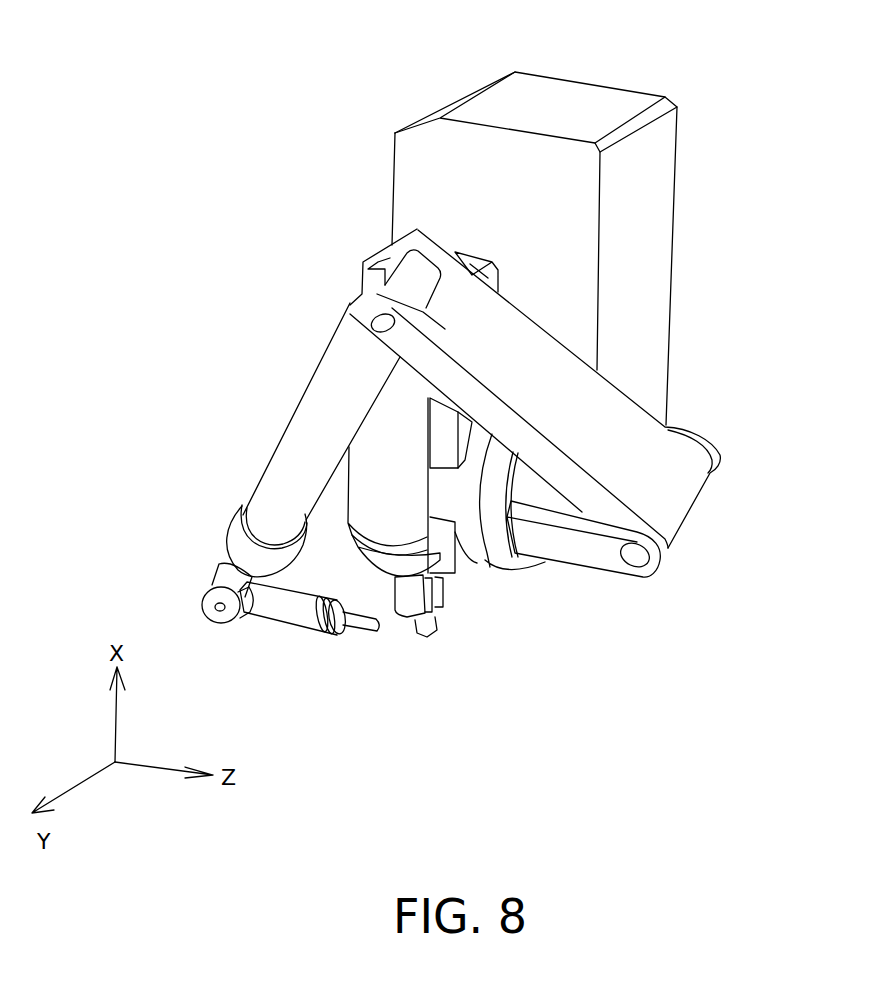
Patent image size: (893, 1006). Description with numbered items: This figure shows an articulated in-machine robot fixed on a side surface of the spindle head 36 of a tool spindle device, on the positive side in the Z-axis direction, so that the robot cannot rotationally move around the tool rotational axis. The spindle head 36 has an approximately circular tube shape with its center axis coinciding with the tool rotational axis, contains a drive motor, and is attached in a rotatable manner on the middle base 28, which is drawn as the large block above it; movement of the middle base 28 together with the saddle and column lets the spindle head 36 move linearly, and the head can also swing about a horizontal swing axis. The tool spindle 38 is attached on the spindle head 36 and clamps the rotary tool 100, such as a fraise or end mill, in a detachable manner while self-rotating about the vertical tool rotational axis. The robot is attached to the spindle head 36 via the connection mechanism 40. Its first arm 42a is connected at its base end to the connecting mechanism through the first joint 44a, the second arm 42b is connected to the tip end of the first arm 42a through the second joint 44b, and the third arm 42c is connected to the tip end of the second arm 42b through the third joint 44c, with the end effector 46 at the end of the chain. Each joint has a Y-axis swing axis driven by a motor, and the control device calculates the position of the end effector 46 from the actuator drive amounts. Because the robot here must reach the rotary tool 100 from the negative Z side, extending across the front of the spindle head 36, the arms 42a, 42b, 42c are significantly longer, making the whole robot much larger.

The middle base 28 is at (585, 97).
The spindle head 36 is at (382, 490).
The tool spindle 38 is at (226, 538).
The connection mechanism 40 is at (492, 532).
The first arm 42a is at (623, 412).
The second arm 42b is at (313, 410).
The third arm 42c is at (288, 607).
The first joint 44a is at (642, 558).
The second joint 44b is at (382, 320).
The third joint 44c is at (214, 612).
The end effector 46 is at (363, 620).
The rotary tool 100 is at (425, 636).